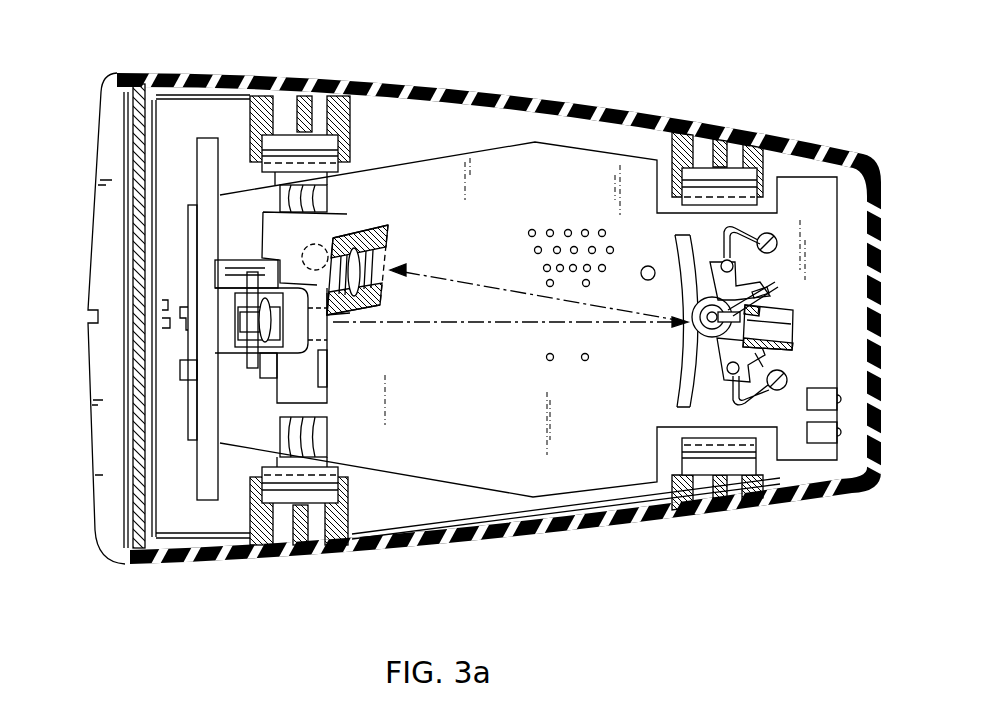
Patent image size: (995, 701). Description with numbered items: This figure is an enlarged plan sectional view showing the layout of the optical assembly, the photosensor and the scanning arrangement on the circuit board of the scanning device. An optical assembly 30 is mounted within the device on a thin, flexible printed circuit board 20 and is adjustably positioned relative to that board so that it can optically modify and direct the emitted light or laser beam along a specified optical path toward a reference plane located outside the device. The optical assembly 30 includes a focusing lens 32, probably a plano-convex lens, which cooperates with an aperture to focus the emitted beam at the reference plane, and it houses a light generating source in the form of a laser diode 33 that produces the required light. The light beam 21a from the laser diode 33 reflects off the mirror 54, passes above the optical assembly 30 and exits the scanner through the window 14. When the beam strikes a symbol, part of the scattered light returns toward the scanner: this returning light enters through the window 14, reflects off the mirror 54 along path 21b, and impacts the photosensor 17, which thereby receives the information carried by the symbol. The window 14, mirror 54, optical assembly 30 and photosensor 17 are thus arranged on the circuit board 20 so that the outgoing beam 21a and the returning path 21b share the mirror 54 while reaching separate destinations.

The window 14 is at (137, 480).
The photosensor 17 is at (350, 222).
The printed circuit board 20 is at (592, 172).
The light beam 21a is at (435, 323).
The path 21b is at (455, 283).
The optical assembly 30 is at (245, 314).
The focusing lens 32 is at (248, 336).
The laser diode 33 is at (248, 302).
The mirror 54 is at (690, 300).